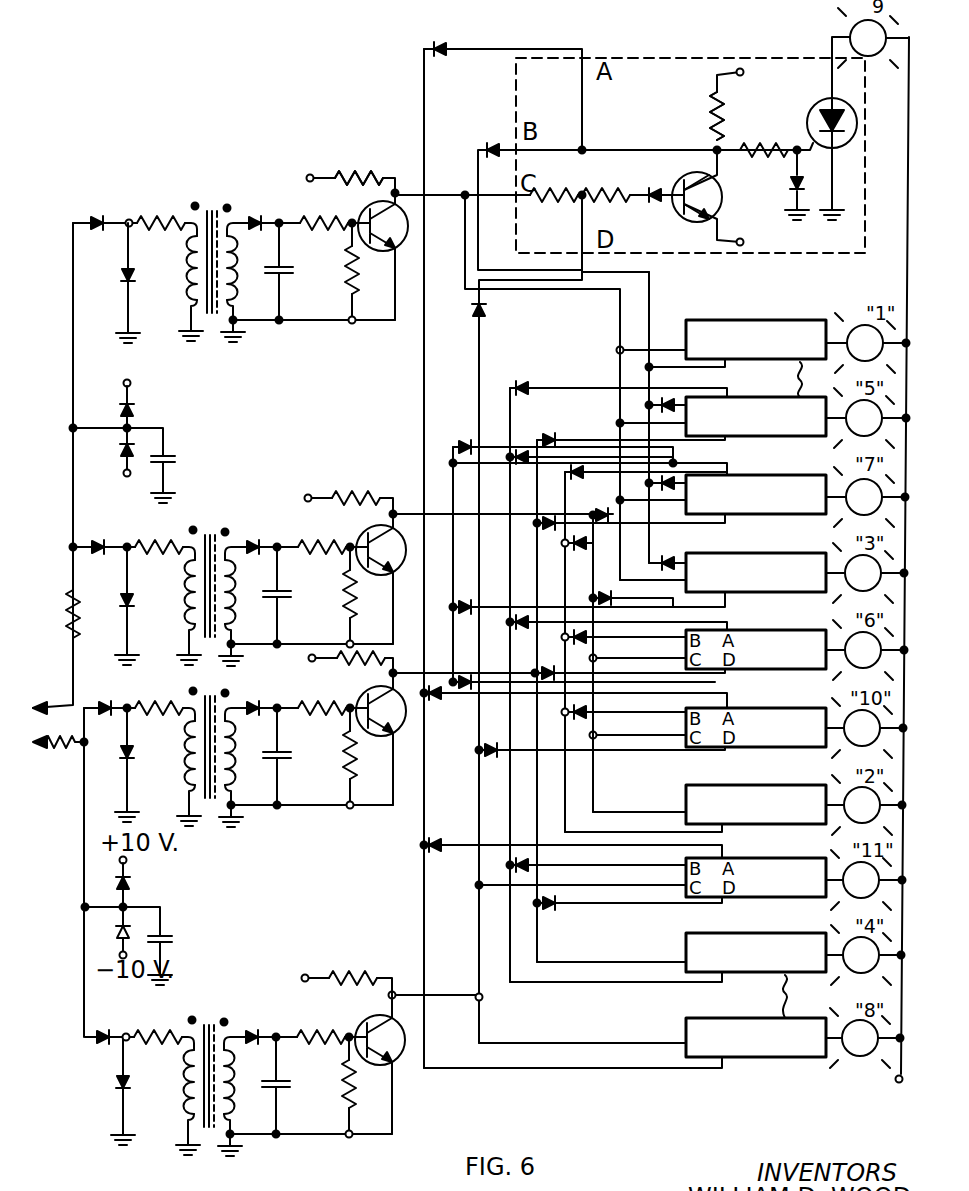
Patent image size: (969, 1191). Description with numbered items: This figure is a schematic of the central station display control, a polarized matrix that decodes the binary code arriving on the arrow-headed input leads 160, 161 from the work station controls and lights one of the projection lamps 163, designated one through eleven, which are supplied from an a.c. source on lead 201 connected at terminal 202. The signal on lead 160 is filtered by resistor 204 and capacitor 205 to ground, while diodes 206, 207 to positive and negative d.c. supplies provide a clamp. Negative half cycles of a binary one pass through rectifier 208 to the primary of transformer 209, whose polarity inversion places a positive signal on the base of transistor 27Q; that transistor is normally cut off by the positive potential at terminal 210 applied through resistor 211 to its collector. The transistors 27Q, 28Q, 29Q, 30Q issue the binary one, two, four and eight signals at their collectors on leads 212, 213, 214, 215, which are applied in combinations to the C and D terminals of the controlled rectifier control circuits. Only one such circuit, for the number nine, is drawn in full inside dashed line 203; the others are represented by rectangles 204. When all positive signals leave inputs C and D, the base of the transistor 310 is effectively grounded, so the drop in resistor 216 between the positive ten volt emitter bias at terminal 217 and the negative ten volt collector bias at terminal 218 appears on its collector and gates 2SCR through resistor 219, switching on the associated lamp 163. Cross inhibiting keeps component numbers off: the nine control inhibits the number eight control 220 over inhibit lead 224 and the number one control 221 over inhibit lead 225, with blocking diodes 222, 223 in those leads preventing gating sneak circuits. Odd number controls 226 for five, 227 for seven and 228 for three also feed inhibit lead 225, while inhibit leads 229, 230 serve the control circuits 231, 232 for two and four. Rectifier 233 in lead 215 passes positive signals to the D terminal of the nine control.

The arrow-headed lead 160 is at (72, 706).
The arrow-headed lead 161 is at (60, 758).
The projection lamp 163 is at (854, 32).
The lead 201 is at (908, 264).
The terminal 202 is at (894, 1082).
The dashed line (control circuit) 203 is at (760, 253).
The resistor / rectangles 204 is at (68, 612).
The capacitor 205 is at (178, 460).
The diode 206 is at (136, 410).
The diode 207 is at (120, 448).
The rectifier 208 is at (101, 217).
The transformer 209 is at (153, 283).
The terminal 210 is at (309, 181).
The resistor 211 is at (364, 178).
The lead 212 is at (617, 347).
The lead 213 is at (394, 512).
The lead 214 is at (424, 695).
The lead 215 is at (392, 992).
The resistor 216 is at (714, 100).
The positive 10 volt emitter bias terminal 217 is at (734, 241).
The negative 10 volt collector bias terminal 218 is at (782, 83).
The resistor 219 is at (776, 154).
The control 220 is at (756, 1037).
The control 221 is at (756, 339).
The blocking diode 222 is at (444, 46).
The blocking diode 223 is at (499, 144).
The inhibit lead 224 is at (424, 336).
The inhibit lead 225 is at (649, 292).
The control 226 is at (756, 417).
The control 227 is at (756, 495).
The control 228 is at (756, 573).
The inhibit lead 229 is at (723, 833).
The inhibit lead 230 is at (521, 981).
The control circuit 231 is at (756, 804).
The control circuit 232 is at (756, 952).
The rectifier 233 is at (474, 310).
The transistor 27Q is at (389, 214).
The transistor 28Q is at (386, 537).
The transistor 29Q is at (386, 699).
The transistor 30Q is at (386, 1029).
The transistor 310 is at (694, 182).
The controlled rectifier 2SCR is at (801, 123).